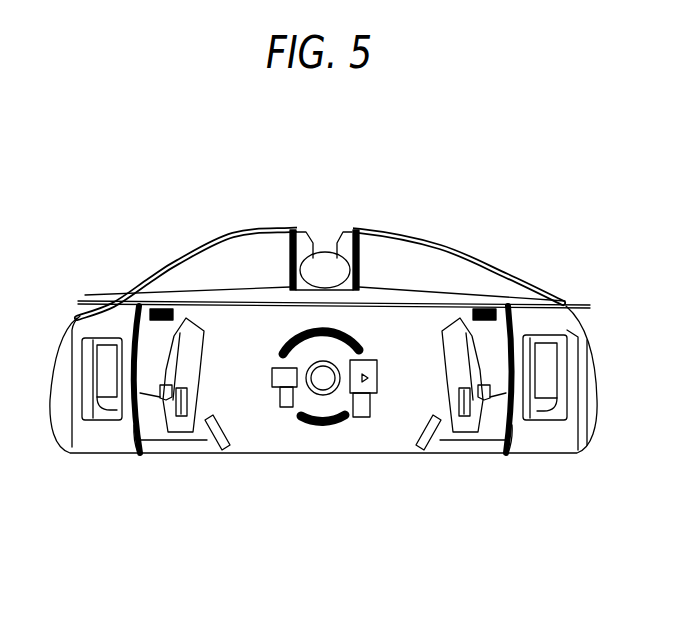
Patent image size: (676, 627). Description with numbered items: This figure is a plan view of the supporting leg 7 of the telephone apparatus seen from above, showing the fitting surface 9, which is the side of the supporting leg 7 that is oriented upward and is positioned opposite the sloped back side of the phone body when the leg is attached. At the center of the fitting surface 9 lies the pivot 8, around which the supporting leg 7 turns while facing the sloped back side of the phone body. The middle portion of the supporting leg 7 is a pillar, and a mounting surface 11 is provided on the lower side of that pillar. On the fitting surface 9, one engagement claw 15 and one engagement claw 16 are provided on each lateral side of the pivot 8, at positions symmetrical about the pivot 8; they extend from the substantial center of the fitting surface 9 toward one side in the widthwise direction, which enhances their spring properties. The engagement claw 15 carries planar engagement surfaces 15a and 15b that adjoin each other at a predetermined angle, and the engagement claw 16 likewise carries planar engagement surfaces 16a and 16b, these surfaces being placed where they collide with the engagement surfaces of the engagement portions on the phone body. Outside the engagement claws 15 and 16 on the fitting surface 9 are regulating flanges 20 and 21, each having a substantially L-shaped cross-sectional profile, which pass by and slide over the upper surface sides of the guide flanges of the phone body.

The supporting leg 7 is at (222, 260).
The pivot 8 is at (323, 380).
The fitting surface 9 is at (273, 440).
The mounting surface 11 is at (143, 265).
The engagement claw 15 is at (168, 405).
The planar engagement surface 15a is at (165, 395).
The planar engagement surface 15b is at (137, 428).
The engagement claw 16 is at (484, 400).
The planar engagement surface 16a is at (512, 425).
The planar engagement surface 16b is at (487, 383).
The regulating flange 20 is at (105, 370).
The regulating flange 21 is at (540, 353).